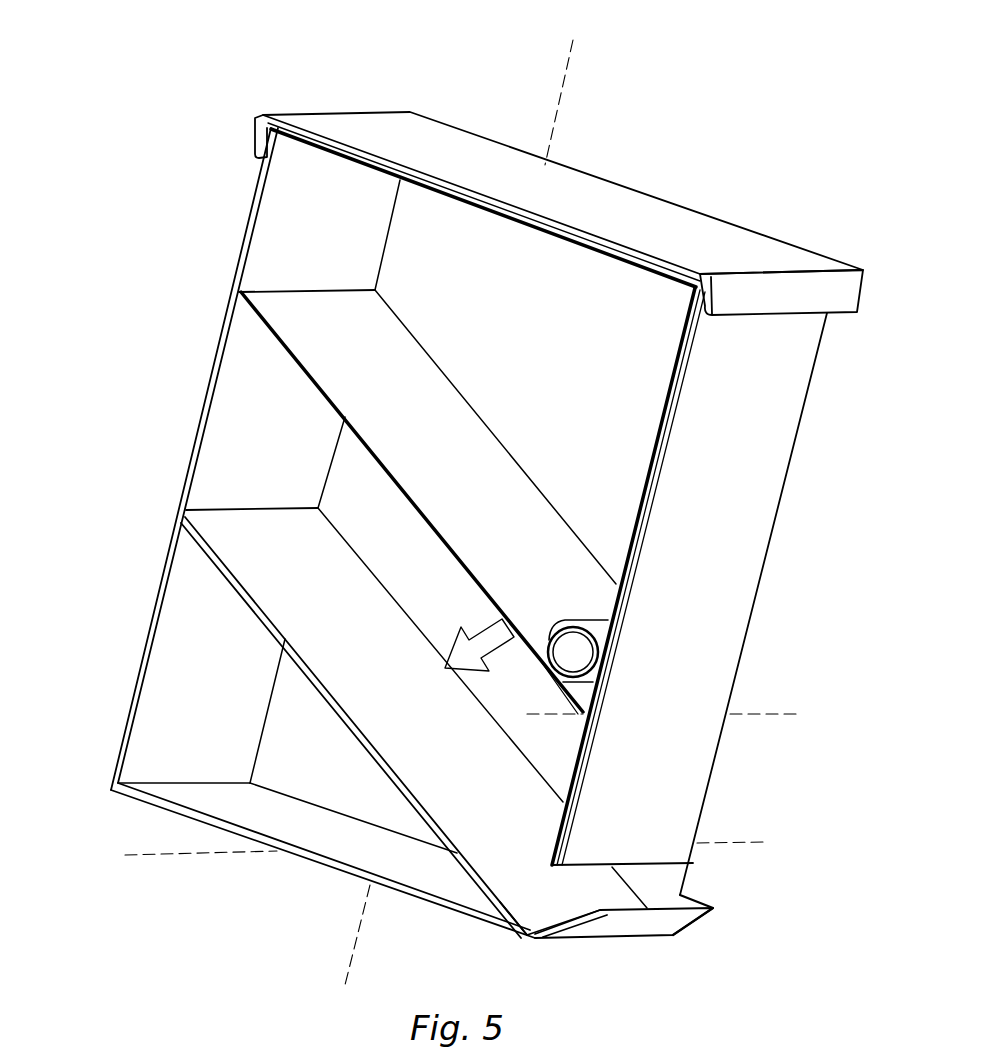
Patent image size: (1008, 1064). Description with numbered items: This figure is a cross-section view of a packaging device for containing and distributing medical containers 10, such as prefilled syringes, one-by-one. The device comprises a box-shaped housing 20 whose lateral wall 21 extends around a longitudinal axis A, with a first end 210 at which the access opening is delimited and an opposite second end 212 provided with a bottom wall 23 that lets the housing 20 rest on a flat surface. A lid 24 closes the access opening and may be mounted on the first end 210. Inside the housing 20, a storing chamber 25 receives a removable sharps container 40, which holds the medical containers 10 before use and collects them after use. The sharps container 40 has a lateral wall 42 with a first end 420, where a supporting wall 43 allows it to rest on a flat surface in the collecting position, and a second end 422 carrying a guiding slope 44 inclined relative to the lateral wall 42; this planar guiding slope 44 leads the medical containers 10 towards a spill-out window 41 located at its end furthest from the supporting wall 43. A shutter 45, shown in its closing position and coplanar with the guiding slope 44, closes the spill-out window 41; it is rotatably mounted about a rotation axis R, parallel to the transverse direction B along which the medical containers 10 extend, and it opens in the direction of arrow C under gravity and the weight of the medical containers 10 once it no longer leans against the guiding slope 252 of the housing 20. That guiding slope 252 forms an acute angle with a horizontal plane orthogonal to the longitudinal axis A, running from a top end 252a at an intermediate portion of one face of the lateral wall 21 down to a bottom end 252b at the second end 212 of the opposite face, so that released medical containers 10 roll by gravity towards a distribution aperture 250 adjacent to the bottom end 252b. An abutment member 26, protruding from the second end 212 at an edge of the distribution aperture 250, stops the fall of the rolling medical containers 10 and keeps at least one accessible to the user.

The medical container 10 is at (602, 628).
The box-shaped housing 20 is at (762, 440).
The lateral wall 21 is at (628, 576).
The bottom wall 23 is at (372, 885).
The lid 24 is at (640, 217).
The storing chamber 25 is at (386, 511).
The abutment member 26 is at (657, 923).
The sharps container 40 is at (278, 237).
The spill-out window 41 is at (563, 520).
The lateral wall 42 is at (198, 455).
The supporting wall 43 is at (498, 215).
The guiding slope 44 is at (440, 392).
The shutter 45 is at (580, 572).
The first end 210 is at (706, 272).
The second end 212 is at (110, 785).
The distribution aperture 250 is at (658, 862).
The guiding slope 252 is at (220, 525).
The top end 252a is at (241, 506).
The bottom end 252b is at (540, 926).
The first end 420 is at (287, 143).
The second end 422 is at (330, 290).
The longitudinal axis A is at (475, 506).
The transverse direction B is at (456, 844).
The rotation axis R is at (676, 714).
The arrow C is at (478, 632).